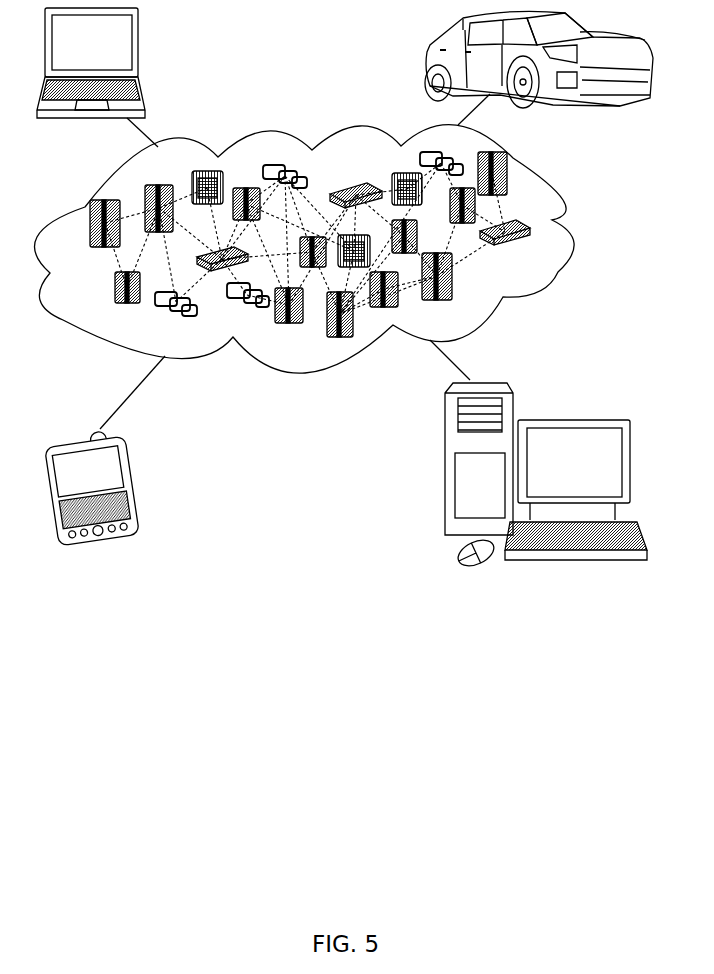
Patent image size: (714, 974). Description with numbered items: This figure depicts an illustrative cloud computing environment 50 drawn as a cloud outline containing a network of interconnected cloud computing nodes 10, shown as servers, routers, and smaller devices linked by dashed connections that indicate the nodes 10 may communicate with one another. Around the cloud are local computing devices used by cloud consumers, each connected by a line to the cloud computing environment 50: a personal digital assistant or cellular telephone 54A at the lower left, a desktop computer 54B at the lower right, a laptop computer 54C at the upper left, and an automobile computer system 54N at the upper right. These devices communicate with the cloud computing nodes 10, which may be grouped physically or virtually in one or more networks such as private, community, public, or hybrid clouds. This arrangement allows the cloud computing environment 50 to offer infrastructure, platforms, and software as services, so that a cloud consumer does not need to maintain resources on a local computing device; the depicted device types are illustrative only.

The cloud computing environment 50 is at (566, 226).
The cloud computing nodes 10 is at (536, 251).
The laptop computer 54C is at (140, 52).
The automobile computer system 54N is at (425, 62).
The personal digital assistant or cellular telephone 54A is at (130, 482).
The desktop computer 54B is at (568, 421).